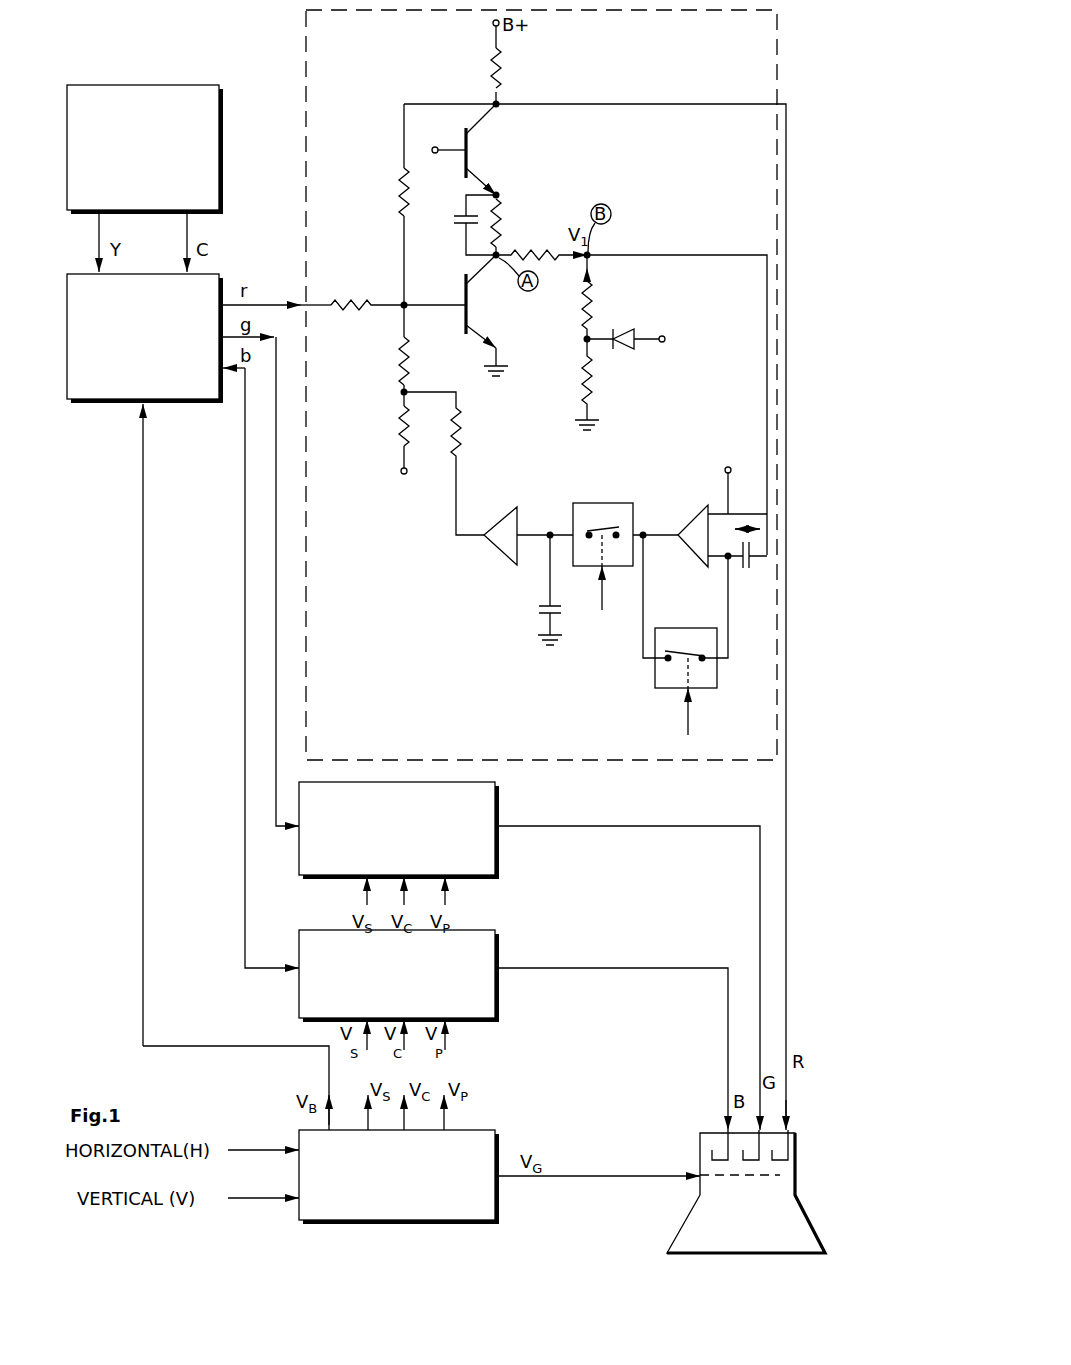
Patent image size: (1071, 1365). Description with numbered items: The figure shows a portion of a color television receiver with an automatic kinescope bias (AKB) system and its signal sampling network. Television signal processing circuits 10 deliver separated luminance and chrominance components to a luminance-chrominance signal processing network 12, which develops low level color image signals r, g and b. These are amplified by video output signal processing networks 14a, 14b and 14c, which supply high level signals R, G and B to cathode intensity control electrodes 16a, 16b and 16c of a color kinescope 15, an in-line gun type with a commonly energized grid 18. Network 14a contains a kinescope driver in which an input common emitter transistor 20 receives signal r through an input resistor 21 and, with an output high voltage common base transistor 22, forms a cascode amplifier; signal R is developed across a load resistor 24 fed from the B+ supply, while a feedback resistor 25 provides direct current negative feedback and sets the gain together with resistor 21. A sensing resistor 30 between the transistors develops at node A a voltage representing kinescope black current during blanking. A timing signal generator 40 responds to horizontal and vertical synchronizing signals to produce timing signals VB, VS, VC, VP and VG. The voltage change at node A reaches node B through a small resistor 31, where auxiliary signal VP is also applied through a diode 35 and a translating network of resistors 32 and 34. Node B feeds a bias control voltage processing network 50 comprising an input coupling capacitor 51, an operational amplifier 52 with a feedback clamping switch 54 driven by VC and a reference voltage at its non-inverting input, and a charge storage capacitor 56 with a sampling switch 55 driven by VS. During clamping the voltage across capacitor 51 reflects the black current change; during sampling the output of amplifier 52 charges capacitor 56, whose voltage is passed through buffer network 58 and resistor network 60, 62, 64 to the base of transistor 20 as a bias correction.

The television signal processing circuits 10 is at (219, 86).
The luminance-chrominance signal processing network 12 is at (99, 403).
The video output signal processing network 14a is at (304, 218).
The video output signal processing network 14b is at (498, 854).
The video output signal processing network 14c is at (498, 940).
The color kinescope 15 is at (670, 1248).
The cathode intensity control electrode 16a is at (796, 1148).
The cathode intensity control electrode 16b is at (751, 1162).
The cathode intensity control electrode 16c is at (712, 1156).
The grid 18 is at (712, 1177).
The input common emitter transistor 20 is at (509, 314).
The input resistor 21 is at (376, 300).
The output high voltage common base transistor 22 is at (507, 163).
The load resistor 24 is at (502, 68).
The feedback resistor 25 is at (400, 208).
The sensing resistor 30 is at (499, 211).
The resistor 31 is at (553, 254).
The resistor 32 is at (594, 404).
The resistor 34 is at (590, 306).
The diode 35 is at (630, 350).
The timing signal generator 40 is at (498, 1206).
The bias control voltage processing network 50 is at (670, 461).
The input coupling capacitor 51 is at (750, 570).
The input clamping and sampling operational amplifier 52 is at (698, 512).
The feedback switch 54 is at (717, 690).
The switch 55 is at (618, 494).
The charge storage capacitor 56 is at (538, 609).
The network 58 is at (500, 518).
The resistor 60 is at (462, 456).
The resistor 62 is at (398, 354).
The resistor 64 is at (396, 432).